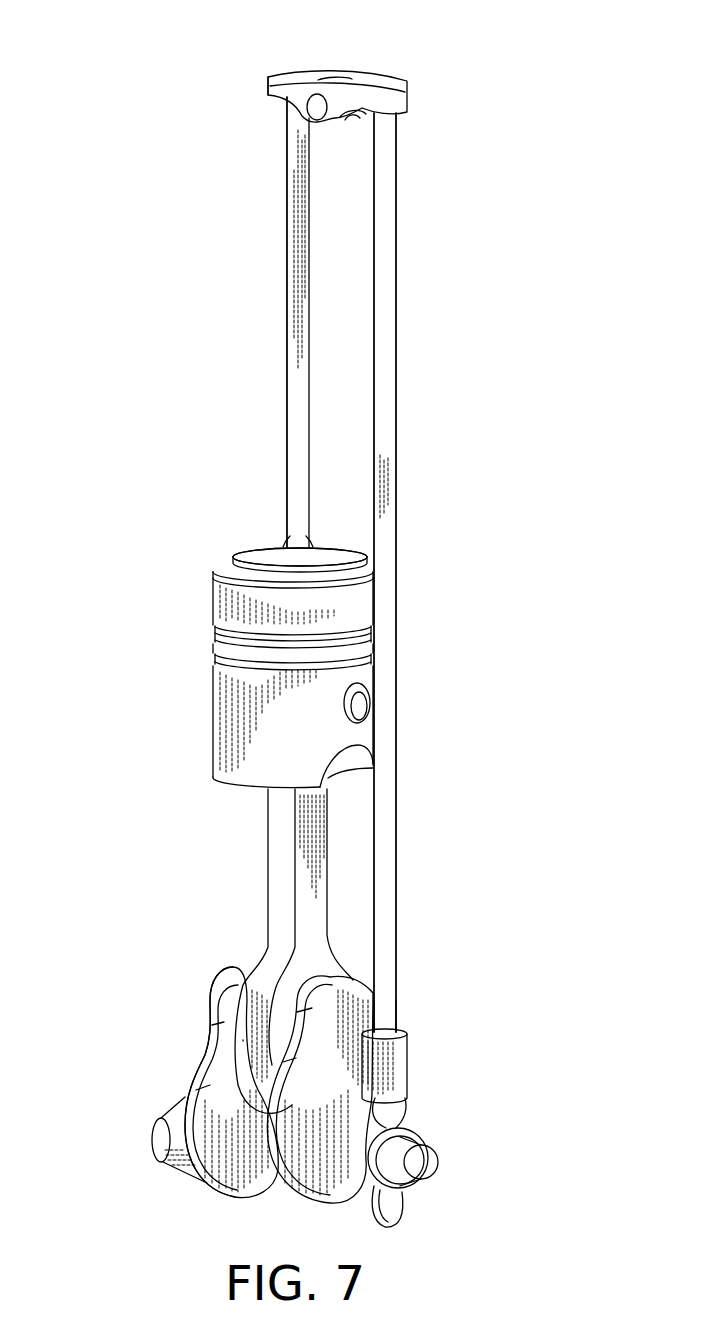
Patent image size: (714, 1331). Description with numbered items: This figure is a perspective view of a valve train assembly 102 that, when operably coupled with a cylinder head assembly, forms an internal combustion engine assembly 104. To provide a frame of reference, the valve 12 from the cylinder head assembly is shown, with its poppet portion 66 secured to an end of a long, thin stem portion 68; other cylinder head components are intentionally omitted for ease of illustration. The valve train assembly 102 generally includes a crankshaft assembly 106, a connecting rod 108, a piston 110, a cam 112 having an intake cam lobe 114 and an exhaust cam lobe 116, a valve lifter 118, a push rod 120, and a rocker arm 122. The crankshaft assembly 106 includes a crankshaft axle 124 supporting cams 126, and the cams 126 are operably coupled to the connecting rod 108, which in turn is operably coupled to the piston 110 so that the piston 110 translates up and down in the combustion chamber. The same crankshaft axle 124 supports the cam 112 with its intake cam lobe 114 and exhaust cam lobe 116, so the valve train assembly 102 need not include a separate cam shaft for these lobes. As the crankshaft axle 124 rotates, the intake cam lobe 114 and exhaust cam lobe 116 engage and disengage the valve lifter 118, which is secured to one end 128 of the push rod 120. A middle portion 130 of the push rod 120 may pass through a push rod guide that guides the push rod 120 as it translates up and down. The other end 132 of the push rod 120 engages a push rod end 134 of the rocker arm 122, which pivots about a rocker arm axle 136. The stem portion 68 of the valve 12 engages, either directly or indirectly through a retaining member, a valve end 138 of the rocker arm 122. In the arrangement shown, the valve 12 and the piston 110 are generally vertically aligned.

The valve 12 is at (298, 435).
The poppet portion 66 is at (261, 547).
The stem portion 68 is at (293, 273).
The valve train assembly 102 is at (471, 871).
The internal combustion engine assembly 104 is at (172, 242).
The crankshaft assembly 106 is at (181, 1074).
The connecting rod 108 is at (278, 895).
The piston 110 is at (228, 733).
The cam 112 is at (357, 1160).
The intake cam lobe 114 is at (393, 1110).
The exhaust cam lobe 116 is at (392, 1210).
The valve lifter 118 is at (407, 1062).
The push rod 120 is at (397, 387).
The rocker arm 122 is at (356, 122).
The crankshaft axle 124 is at (152, 1140).
The cams 126 is at (225, 993).
The one end 128 is at (416, 1006).
The middle portion 130 is at (422, 636).
The other end 132 is at (414, 149).
The push rod end 134 is at (402, 66).
The rocker arm axle 136 is at (315, 108).
The valve end 138 is at (276, 61).